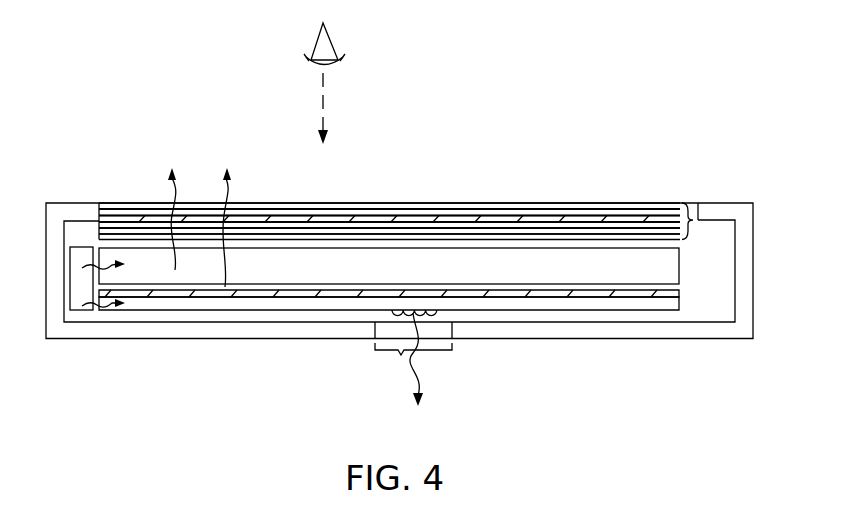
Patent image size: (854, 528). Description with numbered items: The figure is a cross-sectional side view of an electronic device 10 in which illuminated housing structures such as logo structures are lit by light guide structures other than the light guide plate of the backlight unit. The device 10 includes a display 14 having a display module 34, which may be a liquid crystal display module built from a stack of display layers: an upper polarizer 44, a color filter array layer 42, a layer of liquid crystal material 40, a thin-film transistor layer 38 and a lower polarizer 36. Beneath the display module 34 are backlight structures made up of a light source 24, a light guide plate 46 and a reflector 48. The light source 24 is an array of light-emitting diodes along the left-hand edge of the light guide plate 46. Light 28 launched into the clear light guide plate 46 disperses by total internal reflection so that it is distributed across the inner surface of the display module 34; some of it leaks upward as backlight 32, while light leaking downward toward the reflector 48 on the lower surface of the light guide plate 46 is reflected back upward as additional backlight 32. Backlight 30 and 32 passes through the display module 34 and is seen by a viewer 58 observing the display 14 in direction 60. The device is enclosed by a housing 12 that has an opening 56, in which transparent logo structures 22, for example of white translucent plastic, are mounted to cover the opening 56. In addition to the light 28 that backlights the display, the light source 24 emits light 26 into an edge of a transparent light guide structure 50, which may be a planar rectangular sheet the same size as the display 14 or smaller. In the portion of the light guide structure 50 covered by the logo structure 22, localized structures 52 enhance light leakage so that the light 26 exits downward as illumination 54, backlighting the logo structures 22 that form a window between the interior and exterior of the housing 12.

The device 10 is at (691, 61).
The housing 12 is at (680, 330).
The display 14 is at (646, 163).
The logo structures 22 is at (447, 330).
The light source 24 is at (76, 302).
The light 26 is at (109, 305).
The light 28 is at (112, 262).
The backlight 30 is at (177, 190).
The backlight 32 is at (226, 192).
The display module 34 is at (694, 220).
The lower polarizer 36 is at (600, 233).
The thin-film transistor layer 38 is at (555, 226).
The liquid crystal layer 40 is at (510, 219).
The color filter array layer 42 is at (470, 213).
The upper polarizer 44 is at (430, 207).
The light guide plate 46 is at (673, 266).
The reflector 48 is at (677, 292).
The light guide structure 50 is at (595, 303).
The structures 52 is at (392, 317).
The illumination 54 is at (406, 374).
The opening 56 is at (401, 355).
The viewer 58 is at (333, 45).
The direction 60 is at (323, 105).